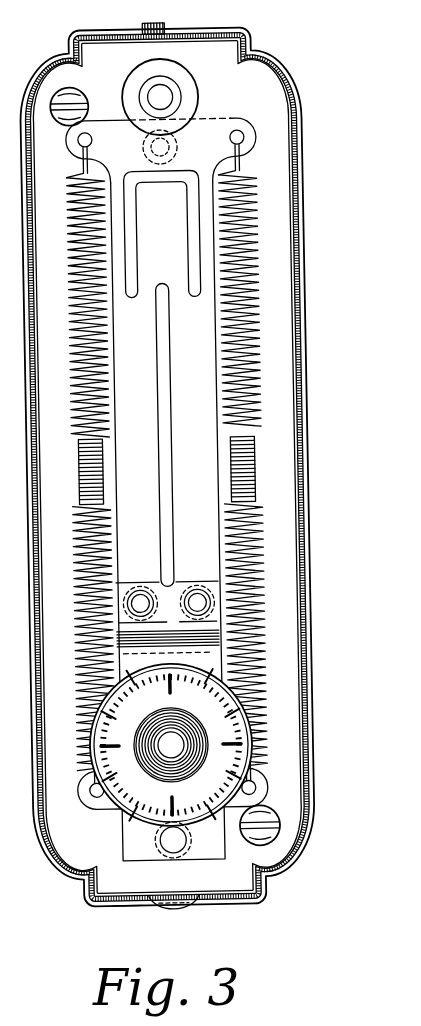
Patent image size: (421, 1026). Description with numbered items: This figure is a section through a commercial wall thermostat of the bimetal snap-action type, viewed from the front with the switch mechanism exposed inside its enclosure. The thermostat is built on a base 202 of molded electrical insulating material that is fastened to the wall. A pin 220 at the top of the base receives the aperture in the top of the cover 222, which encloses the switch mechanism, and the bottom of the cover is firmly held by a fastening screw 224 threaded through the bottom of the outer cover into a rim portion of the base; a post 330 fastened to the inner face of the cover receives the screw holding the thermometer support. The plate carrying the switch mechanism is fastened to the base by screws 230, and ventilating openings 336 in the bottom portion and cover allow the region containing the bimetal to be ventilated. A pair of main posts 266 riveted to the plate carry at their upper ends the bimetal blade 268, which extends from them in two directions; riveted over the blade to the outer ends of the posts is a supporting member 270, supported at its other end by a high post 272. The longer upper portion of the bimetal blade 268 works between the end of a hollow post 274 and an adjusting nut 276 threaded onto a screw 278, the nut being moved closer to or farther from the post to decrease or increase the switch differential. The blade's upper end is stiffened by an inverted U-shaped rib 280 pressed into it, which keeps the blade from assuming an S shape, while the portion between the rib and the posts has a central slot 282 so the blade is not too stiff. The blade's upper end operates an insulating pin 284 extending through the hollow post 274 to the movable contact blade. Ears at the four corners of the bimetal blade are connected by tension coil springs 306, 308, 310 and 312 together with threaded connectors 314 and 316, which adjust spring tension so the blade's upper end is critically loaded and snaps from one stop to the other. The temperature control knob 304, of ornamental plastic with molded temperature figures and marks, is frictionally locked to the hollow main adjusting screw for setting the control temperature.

The base 202 is at (271, 874).
The pin 220 is at (168, 12).
The cover 222 is at (294, 341).
The fastening screw 224 is at (174, 908).
The screws 230 is at (112, 85).
The main posts 266 is at (133, 592).
The bimetal blade 268 is at (176, 273).
The supporting member 270 is at (119, 840).
The high post 272 is at (152, 849).
The hollow post 274 is at (141, 156).
The adjusting nut 276 is at (189, 71).
The screw 278 is at (163, 98).
The inverted U-shaped rib 280 is at (133, 234).
The central slot 282 is at (160, 410).
The insulating pin 284 is at (178, 148).
The temperature control knob 304 is at (242, 757).
The tension coil spring 306 is at (69, 336).
The tension coil spring 308 is at (70, 608).
The tension coil spring 310 is at (247, 268).
The tension coil spring 312 is at (250, 604).
The threaded connector 314 is at (75, 483).
The threaded connector 316 is at (249, 466).
The post 330 is at (218, 33).
The ventilating openings 336 is at (114, 903).